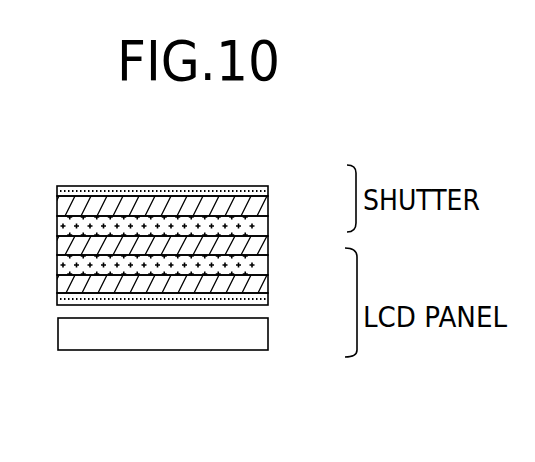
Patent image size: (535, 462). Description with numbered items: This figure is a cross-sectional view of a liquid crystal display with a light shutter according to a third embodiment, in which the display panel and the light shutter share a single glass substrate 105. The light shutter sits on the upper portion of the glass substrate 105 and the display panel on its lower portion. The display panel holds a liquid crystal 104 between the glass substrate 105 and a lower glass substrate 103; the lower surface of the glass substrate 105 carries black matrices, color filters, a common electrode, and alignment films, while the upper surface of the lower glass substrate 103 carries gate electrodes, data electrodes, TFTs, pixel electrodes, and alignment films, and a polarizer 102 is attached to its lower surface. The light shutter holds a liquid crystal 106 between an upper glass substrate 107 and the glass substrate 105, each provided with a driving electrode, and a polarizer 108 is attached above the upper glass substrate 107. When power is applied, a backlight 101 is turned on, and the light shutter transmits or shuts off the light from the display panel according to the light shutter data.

The backlight 101 is at (265, 335).
The polarizer 102 is at (267, 303).
The lower glass substrate 103 is at (266, 287).
The liquid crystal 104 is at (268, 259).
The glass substrate 105 is at (268, 247).
The liquid crystal 106 is at (268, 228).
The upper glass substrate 107 is at (268, 204).
The polarizer 108 is at (268, 189).